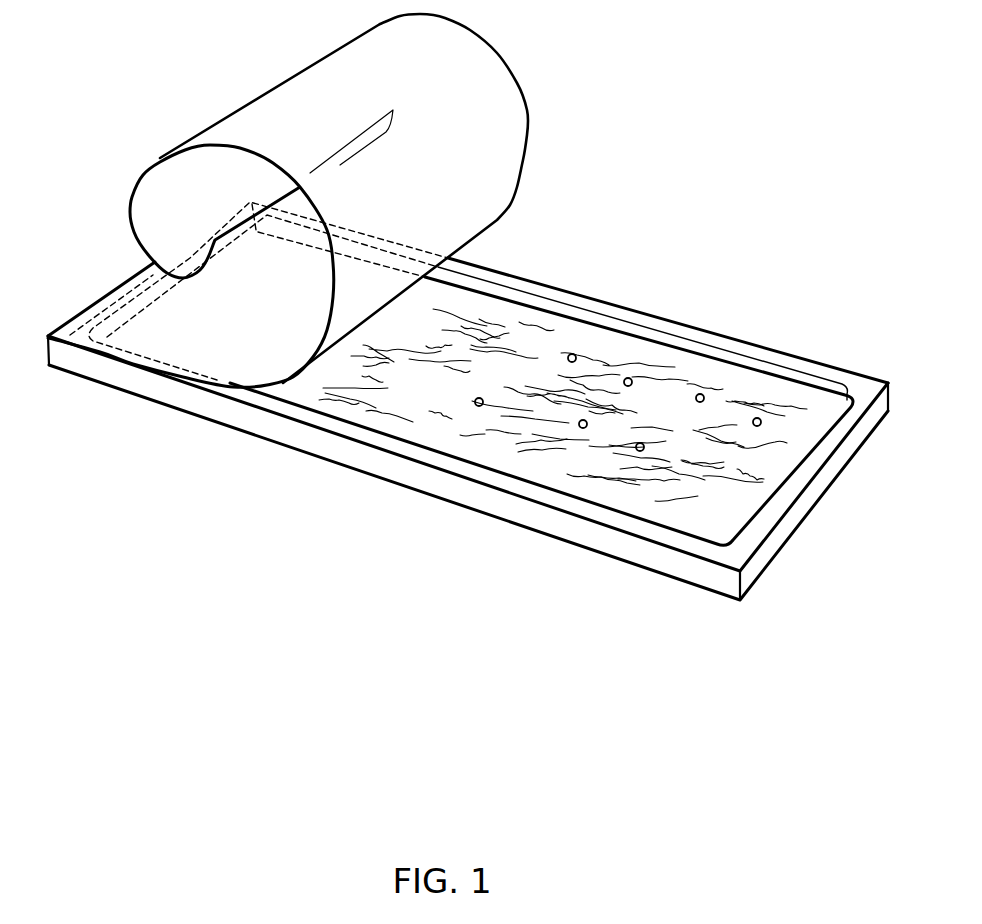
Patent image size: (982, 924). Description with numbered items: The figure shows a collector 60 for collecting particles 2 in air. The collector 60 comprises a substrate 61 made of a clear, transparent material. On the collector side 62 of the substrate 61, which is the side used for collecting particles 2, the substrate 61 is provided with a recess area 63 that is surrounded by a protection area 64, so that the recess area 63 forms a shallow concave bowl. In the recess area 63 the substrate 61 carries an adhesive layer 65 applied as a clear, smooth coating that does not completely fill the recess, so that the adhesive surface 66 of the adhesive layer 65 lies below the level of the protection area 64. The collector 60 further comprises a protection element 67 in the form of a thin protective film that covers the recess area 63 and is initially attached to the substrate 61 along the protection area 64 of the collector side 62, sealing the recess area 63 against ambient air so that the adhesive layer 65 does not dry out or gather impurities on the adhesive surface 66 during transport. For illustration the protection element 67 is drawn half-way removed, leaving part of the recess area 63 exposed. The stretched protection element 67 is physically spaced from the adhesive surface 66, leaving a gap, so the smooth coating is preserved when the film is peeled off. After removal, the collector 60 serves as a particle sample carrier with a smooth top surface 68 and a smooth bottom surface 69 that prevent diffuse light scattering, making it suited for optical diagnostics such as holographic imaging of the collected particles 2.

The particles 2 is at (477, 406).
The collector 60 is at (757, 190).
The substrate 61 is at (101, 368).
The collector side 62 is at (803, 362).
The recess area 63 is at (752, 362).
The protection area 64 is at (680, 328).
The adhesive layer 65 is at (577, 480).
The adhesive surface 66 is at (507, 337).
The protection element 67 is at (483, 150).
The top surface 68 is at (480, 328).
The bottom surface 69 is at (628, 565).